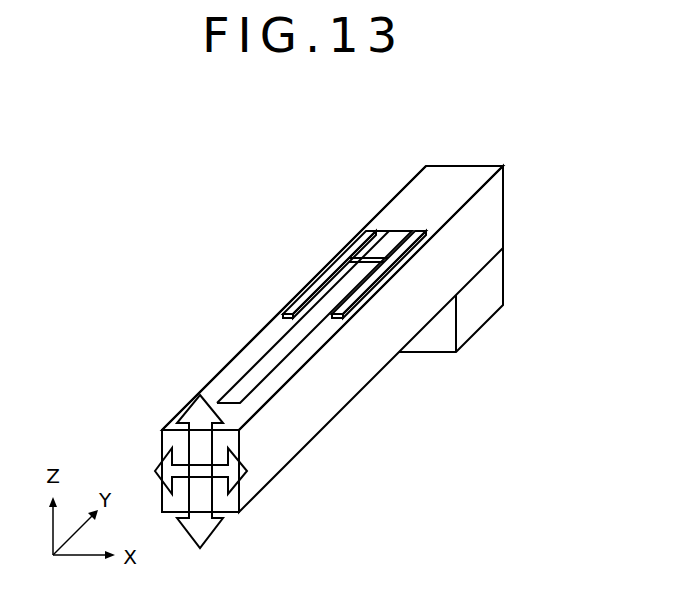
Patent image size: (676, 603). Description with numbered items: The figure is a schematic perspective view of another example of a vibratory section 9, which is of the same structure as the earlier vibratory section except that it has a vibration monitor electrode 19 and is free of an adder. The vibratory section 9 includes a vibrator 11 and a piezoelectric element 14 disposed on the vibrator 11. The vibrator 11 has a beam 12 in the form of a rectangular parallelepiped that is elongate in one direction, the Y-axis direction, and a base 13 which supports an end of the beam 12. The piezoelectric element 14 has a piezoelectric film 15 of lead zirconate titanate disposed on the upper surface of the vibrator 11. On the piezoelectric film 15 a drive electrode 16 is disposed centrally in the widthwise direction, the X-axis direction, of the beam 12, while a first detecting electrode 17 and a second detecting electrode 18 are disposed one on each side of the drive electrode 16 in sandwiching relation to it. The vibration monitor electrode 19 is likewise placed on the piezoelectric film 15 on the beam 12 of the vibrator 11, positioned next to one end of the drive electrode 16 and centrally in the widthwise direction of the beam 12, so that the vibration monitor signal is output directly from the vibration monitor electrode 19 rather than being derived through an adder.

The vibratory section 9 is at (372, 144).
The vibrator 11 is at (558, 198).
The beam 12 is at (359, 357).
The base 13 is at (481, 300).
The piezoelectric element 14 is at (294, 288).
The piezoelectric film 15 is at (250, 340).
The drive electrode 16 is at (277, 348).
The first detecting electrode 17 is at (305, 300).
The second detecting electrode 18 is at (358, 297).
The vibration monitor electrode 19 is at (387, 250).